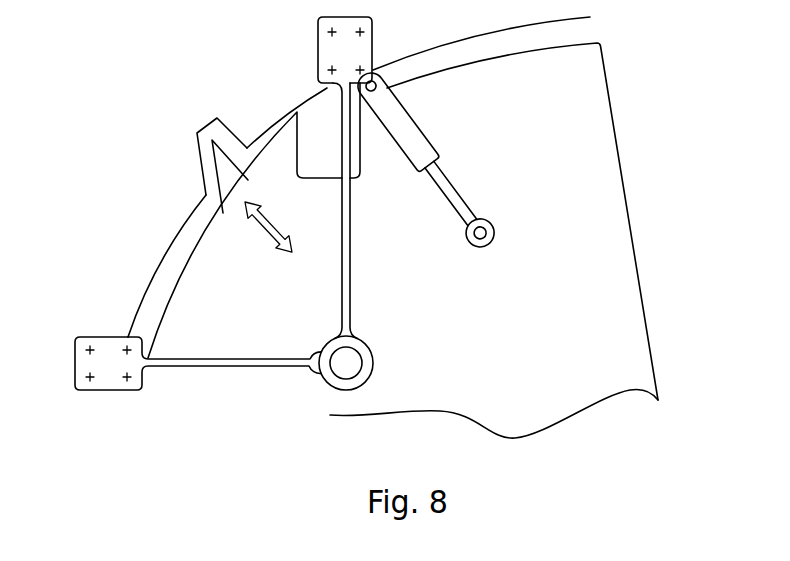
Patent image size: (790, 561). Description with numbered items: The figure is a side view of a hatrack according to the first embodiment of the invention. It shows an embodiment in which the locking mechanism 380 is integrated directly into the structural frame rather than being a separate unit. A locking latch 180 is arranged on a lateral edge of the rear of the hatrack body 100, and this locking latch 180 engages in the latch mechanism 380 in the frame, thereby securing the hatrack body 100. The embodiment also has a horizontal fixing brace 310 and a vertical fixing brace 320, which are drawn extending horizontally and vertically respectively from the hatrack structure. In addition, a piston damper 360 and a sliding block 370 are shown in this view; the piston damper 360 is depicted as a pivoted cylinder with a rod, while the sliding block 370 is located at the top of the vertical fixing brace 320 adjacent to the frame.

The hatrack body 100 is at (598, 133).
The locking latch 180 is at (228, 177).
The horizontal fixing brace 310 is at (215, 362).
The vertical fixing brace 320 is at (345, 260).
The piston damper 360 is at (416, 146).
The sliding block 370 is at (313, 128).
The locking mechanism 380 is at (209, 127).